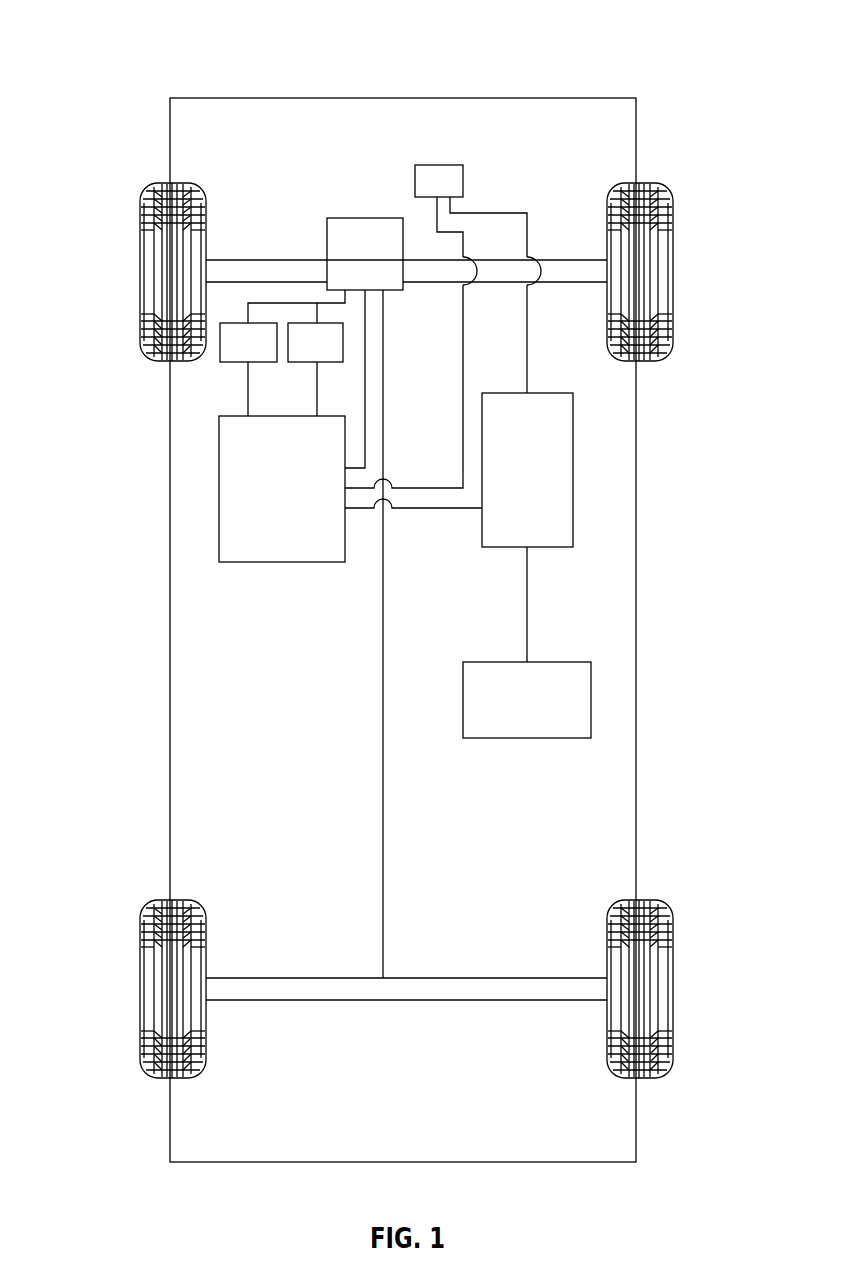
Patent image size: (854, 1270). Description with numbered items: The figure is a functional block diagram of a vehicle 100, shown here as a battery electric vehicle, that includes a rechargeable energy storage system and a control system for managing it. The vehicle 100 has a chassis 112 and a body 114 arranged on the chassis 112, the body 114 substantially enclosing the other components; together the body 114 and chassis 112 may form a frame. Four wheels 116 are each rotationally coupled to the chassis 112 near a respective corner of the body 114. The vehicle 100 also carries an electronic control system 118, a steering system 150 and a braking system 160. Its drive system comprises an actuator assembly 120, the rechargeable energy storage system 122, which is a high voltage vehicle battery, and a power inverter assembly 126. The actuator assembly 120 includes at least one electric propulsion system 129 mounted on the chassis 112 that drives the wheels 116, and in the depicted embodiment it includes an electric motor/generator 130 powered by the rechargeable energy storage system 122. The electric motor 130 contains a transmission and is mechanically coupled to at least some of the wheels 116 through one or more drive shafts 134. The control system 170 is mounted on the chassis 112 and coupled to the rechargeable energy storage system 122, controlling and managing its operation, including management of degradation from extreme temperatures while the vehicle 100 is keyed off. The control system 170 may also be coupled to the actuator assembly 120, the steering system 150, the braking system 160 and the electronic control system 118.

The vehicle 100 is at (130, 48).
The chassis 112 is at (382, 712).
The body 114 is at (170, 575).
The wheels 116 is at (140, 272).
The electronic control system 118 is at (263, 501).
The actuator assembly 120 is at (383, 268).
The rechargeable energy storage system 122 is at (508, 484).
The power inverter assembly 126 is at (420, 193).
The electric propulsion system 129 is at (366, 218).
The electric motor/generator 130 is at (346, 255).
The drive shafts 134 is at (262, 258).
The steering system 150 is at (229, 356).
The braking system 160 is at (297, 356).
The control system 170 is at (548, 661).